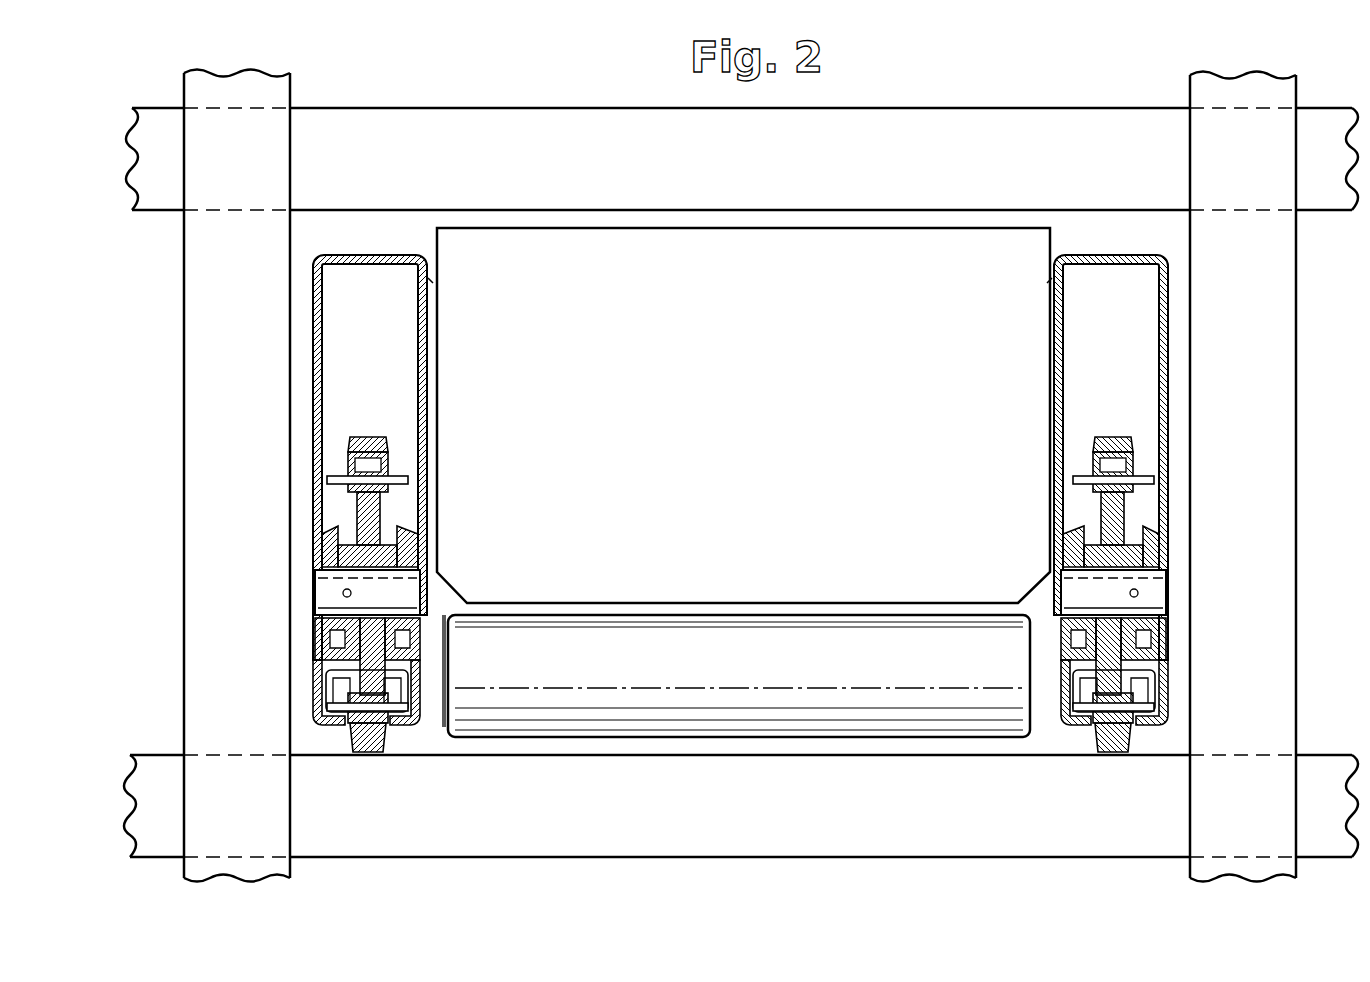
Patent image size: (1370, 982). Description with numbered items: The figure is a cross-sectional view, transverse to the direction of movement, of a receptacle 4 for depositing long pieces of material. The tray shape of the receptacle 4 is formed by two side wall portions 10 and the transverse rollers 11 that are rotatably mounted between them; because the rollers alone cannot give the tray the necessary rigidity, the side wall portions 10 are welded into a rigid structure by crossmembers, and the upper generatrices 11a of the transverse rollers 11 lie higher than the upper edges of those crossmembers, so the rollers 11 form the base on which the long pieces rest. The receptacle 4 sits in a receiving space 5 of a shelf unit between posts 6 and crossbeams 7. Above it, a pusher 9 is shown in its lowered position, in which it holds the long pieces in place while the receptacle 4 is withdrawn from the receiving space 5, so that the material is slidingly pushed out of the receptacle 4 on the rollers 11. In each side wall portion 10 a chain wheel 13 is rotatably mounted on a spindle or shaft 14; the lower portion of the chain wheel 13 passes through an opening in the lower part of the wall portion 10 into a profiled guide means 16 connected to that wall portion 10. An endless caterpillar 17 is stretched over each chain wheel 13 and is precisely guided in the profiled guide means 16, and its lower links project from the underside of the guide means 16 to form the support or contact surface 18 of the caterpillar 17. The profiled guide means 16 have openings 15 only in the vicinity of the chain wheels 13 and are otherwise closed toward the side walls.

The receptacle 4 is at (432, 281).
The receiving space 5 is at (1190, 309).
The post 6 is at (195, 393).
The crossbeam 7 is at (877, 123).
The pusher 9 is at (735, 399).
The side wall portion 10 is at (312, 357).
The transverse roller 11 is at (706, 743).
The upper generatrix 11a is at (678, 607).
The chain wheel 13 is at (328, 524).
The spindle or shaft 14 is at (326, 584).
The opening 15 is at (322, 696).
The profiled guide means 16 is at (324, 708).
The caterpillar 17 is at (330, 462).
The support or contact surface 18 is at (372, 755).